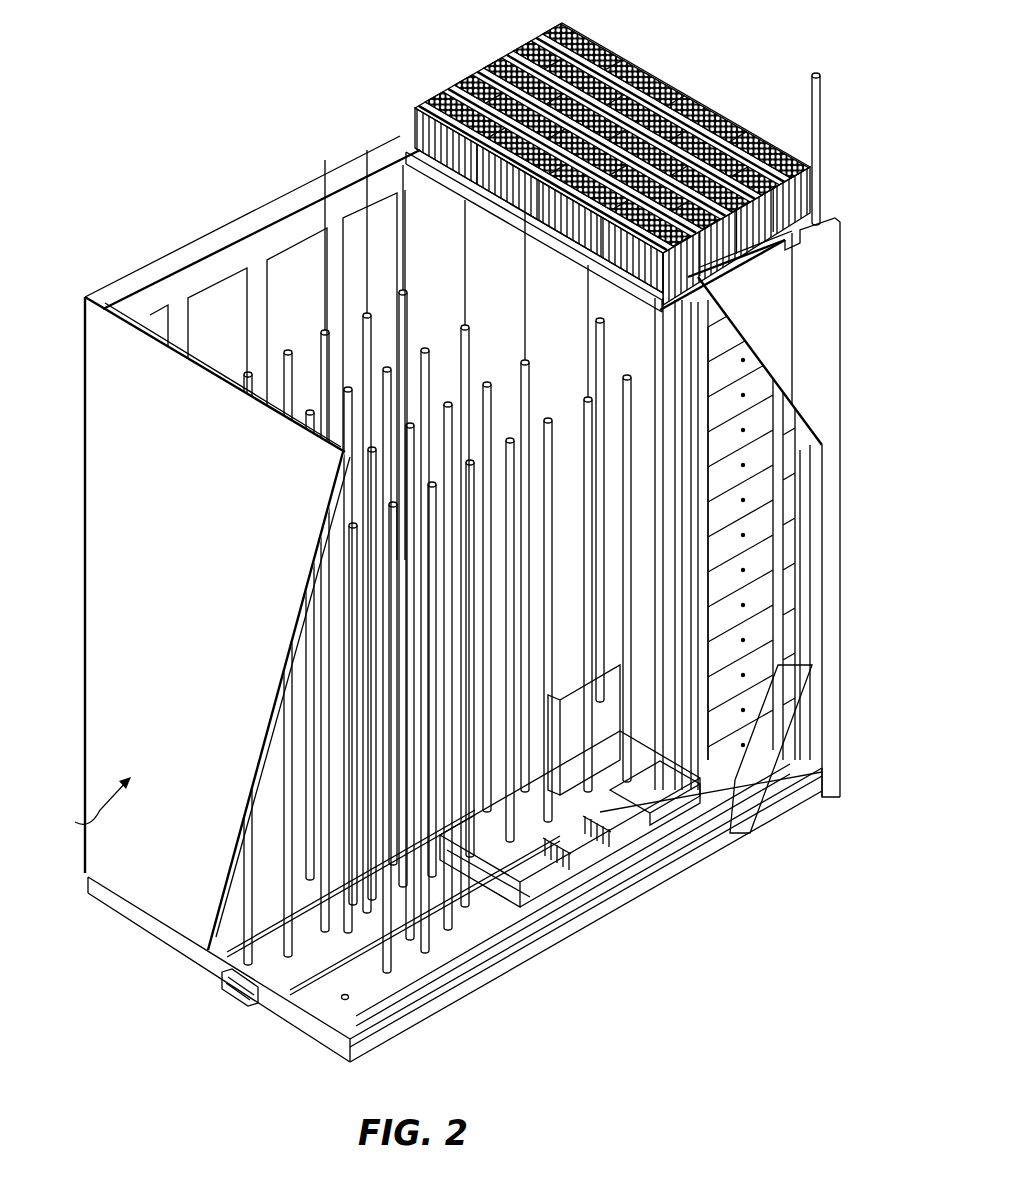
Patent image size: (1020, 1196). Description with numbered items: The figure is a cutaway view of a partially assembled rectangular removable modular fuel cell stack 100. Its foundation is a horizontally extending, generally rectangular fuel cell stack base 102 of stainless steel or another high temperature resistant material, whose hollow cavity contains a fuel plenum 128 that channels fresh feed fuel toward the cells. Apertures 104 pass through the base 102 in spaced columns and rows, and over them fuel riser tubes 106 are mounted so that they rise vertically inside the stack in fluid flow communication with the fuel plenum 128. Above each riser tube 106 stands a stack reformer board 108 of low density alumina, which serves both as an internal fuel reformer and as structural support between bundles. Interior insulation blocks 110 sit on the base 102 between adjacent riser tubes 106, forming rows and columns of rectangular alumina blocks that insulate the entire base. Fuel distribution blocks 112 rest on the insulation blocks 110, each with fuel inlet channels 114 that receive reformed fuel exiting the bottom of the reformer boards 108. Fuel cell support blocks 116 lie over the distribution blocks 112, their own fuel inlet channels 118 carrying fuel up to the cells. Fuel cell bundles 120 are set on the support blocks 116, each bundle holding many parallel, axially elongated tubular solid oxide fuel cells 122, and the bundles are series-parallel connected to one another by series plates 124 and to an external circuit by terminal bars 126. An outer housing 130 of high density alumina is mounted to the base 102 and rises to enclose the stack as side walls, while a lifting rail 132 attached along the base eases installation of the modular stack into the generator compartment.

The rectangular removable modular fuel cell stack 100 is at (72, 828).
The fuel cell stack base 102 is at (313, 1000).
The apertures 104 is at (345, 998).
The fuel riser tubes 106 is at (308, 407).
The stack reformer board 108 is at (487, 222).
The interior insulation blocks 110 is at (477, 860).
The fuel distribution blocks 112 is at (587, 810).
The fuel inlet channels 114 is at (557, 860).
The fuel cell support blocks 116 is at (652, 815).
The fuel inlet channels 118 is at (700, 805).
The fuel cell bundles 120 is at (653, 67).
The solid oxide fuel cells 122 is at (730, 117).
The series plates 124 is at (753, 658).
The terminal bars 126 is at (820, 150).
The fuel plenum 128 is at (190, 960).
The outer housing 130 is at (122, 460).
The lifting rail 132 is at (420, 1025).